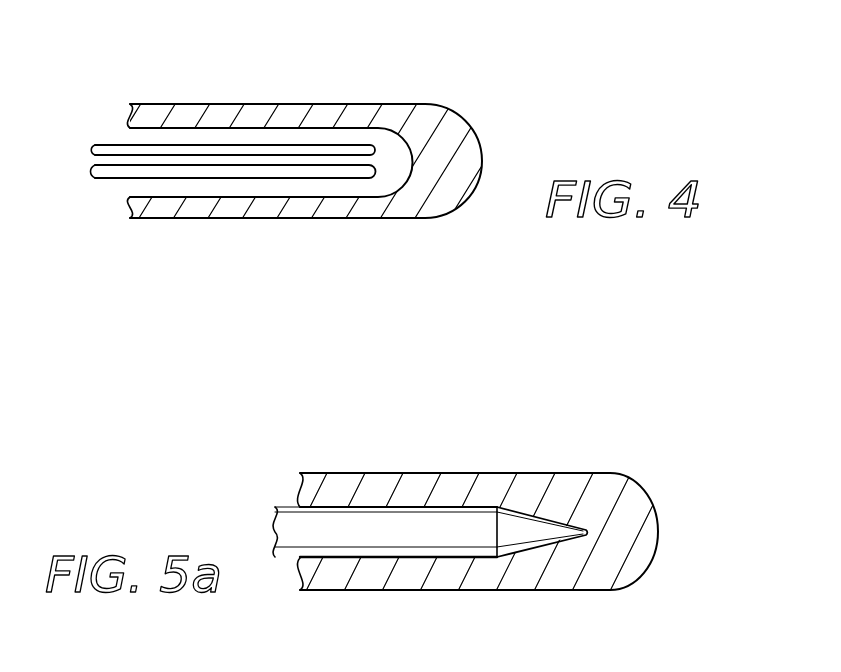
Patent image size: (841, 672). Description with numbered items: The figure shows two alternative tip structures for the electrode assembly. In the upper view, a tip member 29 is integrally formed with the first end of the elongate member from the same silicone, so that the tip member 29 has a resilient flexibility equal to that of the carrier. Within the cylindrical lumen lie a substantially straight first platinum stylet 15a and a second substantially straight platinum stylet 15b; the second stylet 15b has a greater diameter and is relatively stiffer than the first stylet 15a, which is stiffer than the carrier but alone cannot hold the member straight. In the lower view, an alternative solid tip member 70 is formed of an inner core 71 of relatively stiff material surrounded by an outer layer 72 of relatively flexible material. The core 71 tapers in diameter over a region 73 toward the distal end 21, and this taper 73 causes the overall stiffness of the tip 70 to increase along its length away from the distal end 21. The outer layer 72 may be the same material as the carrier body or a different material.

In FIG. 4, the tip member 29 is at (510, 98).
In FIG. 4, the first platinum stylet 15a is at (283, 147).
In FIG. 4, the second platinum stylet 15b is at (258, 176).
In FIG. 5a, the tip member 70 is at (255, 494).
In FIG. 5a, the inner core 71 is at (377, 524).
In FIG. 5a, the outer layer 72 is at (512, 577).
In FIG. 5a, the taper region 73 is at (540, 517).
In FIG. 5a, the distal end 21 is at (662, 525).